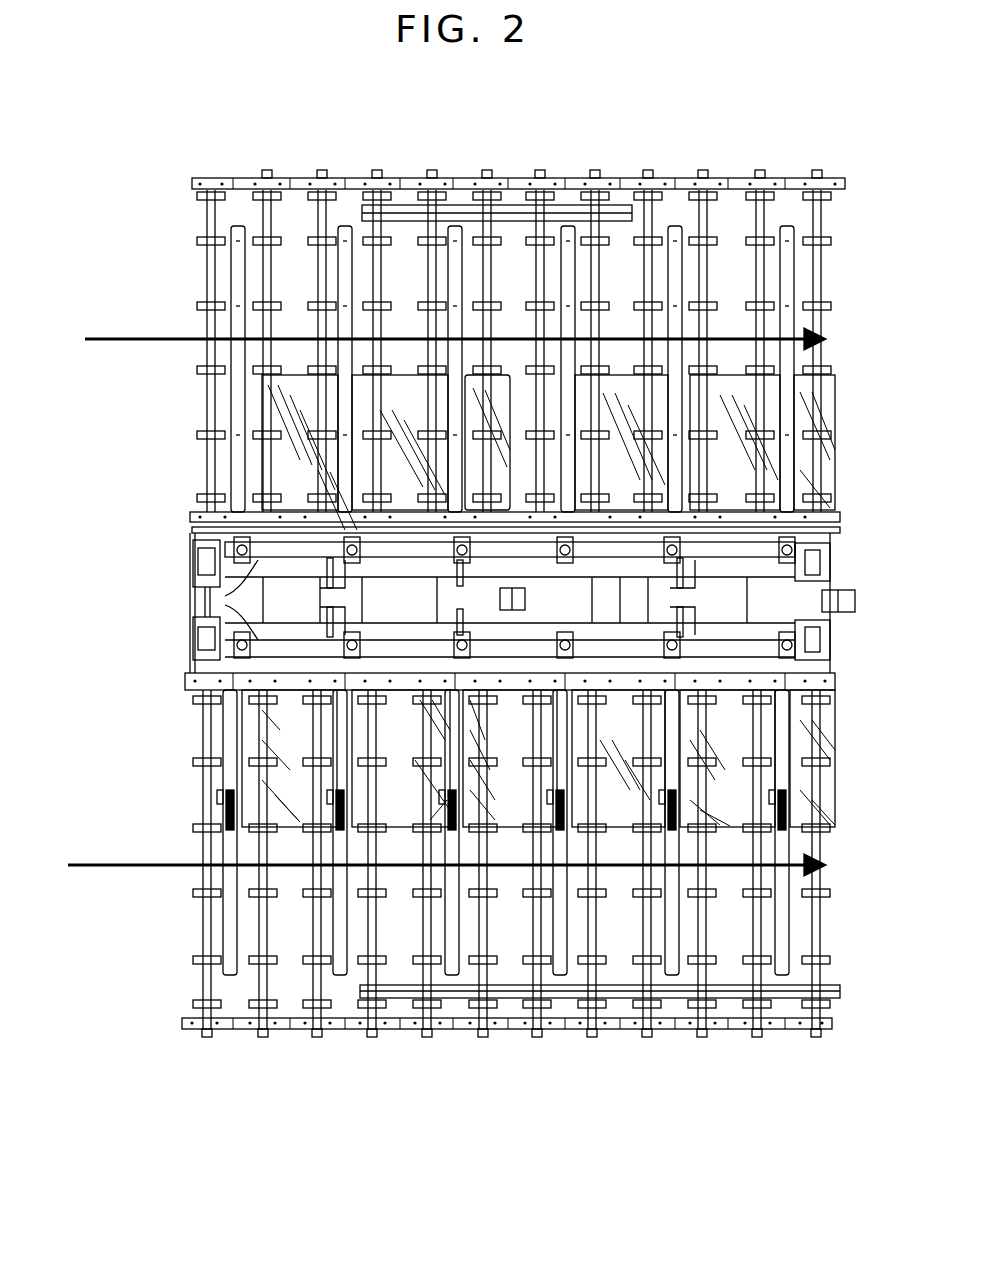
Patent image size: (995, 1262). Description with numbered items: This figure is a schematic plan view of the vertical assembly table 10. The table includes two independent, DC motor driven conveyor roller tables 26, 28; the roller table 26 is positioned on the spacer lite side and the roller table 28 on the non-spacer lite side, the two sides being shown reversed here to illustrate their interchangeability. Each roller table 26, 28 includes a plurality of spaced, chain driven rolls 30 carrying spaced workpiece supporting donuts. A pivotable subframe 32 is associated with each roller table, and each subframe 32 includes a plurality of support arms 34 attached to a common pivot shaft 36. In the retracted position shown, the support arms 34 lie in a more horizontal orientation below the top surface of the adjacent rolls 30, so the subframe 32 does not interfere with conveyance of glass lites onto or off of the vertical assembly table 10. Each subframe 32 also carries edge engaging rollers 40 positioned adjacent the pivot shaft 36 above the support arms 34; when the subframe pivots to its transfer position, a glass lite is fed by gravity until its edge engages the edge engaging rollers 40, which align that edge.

The vertical assembly table 10 is at (192, 228).
The roller table 26 is at (826, 226).
The roller table 28 is at (832, 856).
The rolls 30 is at (211, 222).
The pivotable subframe 32 is at (192, 545).
The support arms 34 is at (567, 272).
The pivot shaft 36 is at (822, 573).
The edge engaging rollers 40 is at (198, 594).